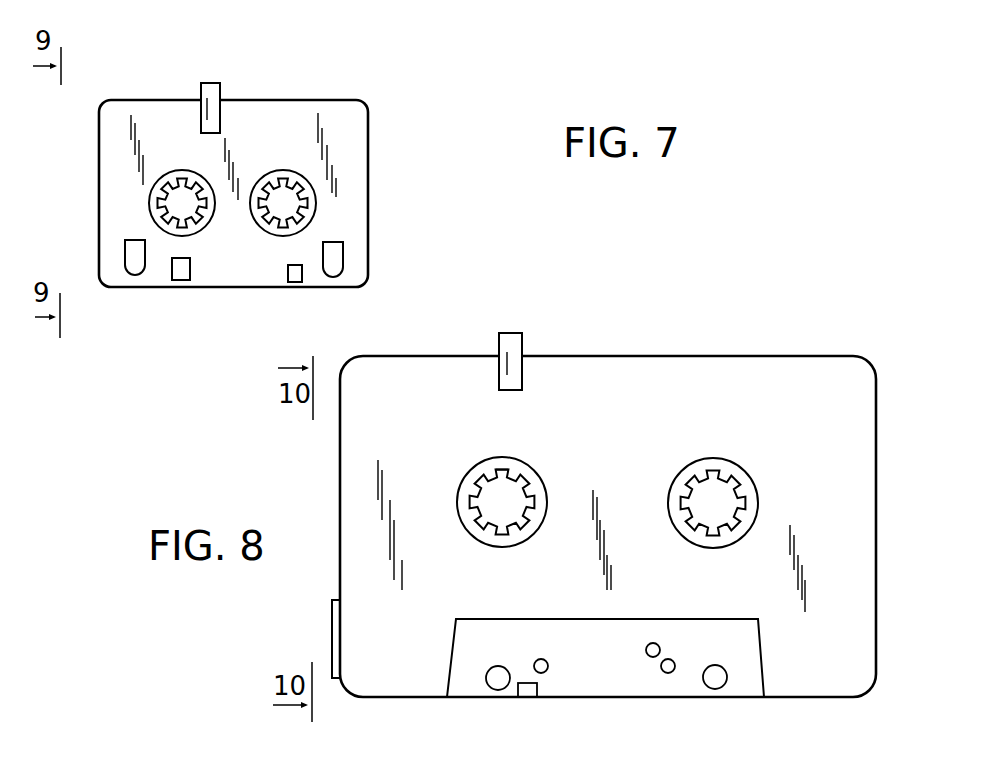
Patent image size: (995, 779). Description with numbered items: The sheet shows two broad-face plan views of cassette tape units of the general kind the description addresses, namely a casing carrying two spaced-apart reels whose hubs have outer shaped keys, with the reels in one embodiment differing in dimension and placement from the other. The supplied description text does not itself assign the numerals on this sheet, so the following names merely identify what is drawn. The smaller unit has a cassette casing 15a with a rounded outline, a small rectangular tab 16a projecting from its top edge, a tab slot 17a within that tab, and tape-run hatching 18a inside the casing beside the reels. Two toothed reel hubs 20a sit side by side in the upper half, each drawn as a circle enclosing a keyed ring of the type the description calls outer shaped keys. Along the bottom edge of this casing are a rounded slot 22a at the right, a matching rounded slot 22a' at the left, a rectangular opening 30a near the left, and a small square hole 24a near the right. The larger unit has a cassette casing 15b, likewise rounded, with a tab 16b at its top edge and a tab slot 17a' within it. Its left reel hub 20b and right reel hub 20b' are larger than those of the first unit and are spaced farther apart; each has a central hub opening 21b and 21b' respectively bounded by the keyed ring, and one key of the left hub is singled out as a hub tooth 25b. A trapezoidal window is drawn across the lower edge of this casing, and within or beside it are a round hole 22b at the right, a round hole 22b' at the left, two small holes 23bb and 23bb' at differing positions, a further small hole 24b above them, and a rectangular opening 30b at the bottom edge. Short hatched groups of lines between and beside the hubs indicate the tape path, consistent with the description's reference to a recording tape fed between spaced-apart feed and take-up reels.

In FIG. 7, the cassette housing 15a is at (344, 86).
In FIG. 7, the tab 16a is at (220, 98).
In FIG. 7, the tab slot 17a is at (253, 71).
In FIG. 7, the tape 18a is at (353, 127).
In FIG. 7, the reel hub 20a is at (317, 213).
In FIG. 7, the slot 22a is at (384, 265).
In FIG. 7, the slot 22a' is at (151, 285).
In FIG. 7, the opening 30a is at (183, 278).
In FIG. 7, the hole 24a is at (299, 281).
In FIG. 8, the cassette housing 15b is at (625, 342).
In FIG. 8, the tab 16b is at (523, 342).
In FIG. 8, the tab slot 17a' is at (467, 345).
In FIG. 8, the reel hub 20b is at (505, 520).
In FIG. 8, the reel hub 20b' is at (755, 503).
In FIG. 8, the hub opening 21b is at (543, 479).
In FIG. 8, the hub opening 21b' is at (751, 475).
In FIG. 8, the hub tooth 25b is at (498, 475).
In FIG. 8, the hole 22b is at (747, 704).
In FIG. 8, the hole 22b' is at (467, 708).
In FIG. 8, the hole 23bb is at (752, 653).
In FIG. 8, the hole 23bb' is at (597, 696).
In FIG. 8, the hole 24b is at (655, 648).
In FIG. 8, the opening 30b is at (526, 690).